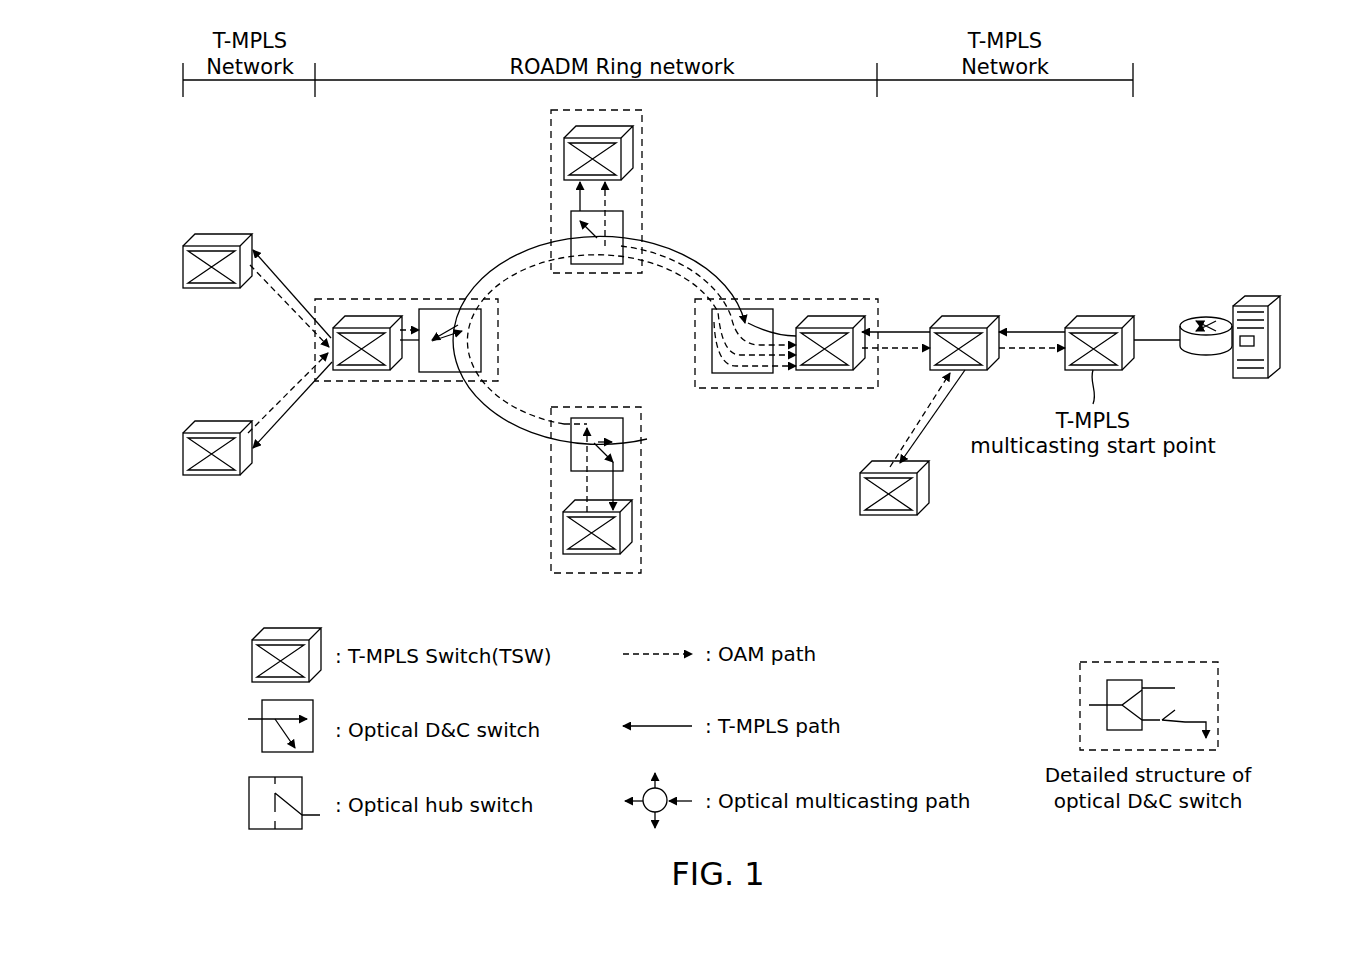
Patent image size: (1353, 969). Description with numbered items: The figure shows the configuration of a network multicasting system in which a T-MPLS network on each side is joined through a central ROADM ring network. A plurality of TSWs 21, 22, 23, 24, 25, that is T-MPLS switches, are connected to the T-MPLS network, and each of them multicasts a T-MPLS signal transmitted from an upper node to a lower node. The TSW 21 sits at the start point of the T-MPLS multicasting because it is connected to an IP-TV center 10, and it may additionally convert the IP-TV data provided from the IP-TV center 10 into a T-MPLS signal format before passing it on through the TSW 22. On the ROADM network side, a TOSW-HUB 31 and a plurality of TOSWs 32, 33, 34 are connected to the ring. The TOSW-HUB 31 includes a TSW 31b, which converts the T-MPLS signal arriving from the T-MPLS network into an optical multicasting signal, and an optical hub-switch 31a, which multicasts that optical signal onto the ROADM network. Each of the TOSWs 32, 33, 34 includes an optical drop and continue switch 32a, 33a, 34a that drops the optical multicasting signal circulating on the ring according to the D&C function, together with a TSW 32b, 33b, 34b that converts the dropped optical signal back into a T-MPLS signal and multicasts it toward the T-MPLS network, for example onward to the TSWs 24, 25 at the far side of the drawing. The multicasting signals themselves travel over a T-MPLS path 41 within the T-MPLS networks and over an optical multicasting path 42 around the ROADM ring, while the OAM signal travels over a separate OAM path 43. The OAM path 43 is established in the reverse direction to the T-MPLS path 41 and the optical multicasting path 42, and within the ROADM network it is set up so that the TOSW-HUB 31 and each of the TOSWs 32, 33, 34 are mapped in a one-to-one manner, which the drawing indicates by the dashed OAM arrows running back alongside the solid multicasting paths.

The IP-TV center 10 is at (1208, 316).
The TSW 21 is at (1098, 328).
The TSW 22 is at (963, 328).
The TSW 23 is at (888, 515).
The TSW 24 is at (218, 246).
The TSW 25 is at (212, 475).
The TOSW-HUB 31 is at (785, 388).
The optical hub-switch 31a is at (748, 309).
The TSW 31b is at (832, 328).
The TOSW 32 is at (551, 176).
The optical D&C switch 32a is at (623, 215).
The TSW 32b is at (632, 150).
The TOSW 33 is at (407, 382).
The optical D&C switch 33a is at (436, 309).
The TSW 33b is at (368, 328).
The TOSW 34 is at (551, 510).
The optical D&C switch 34a is at (623, 455).
The TSW 34b is at (632, 522).
The T-MPLS path 41 is at (266, 258).
The optical multicasting path 42 is at (700, 248).
The OAM path 43 is at (287, 302).